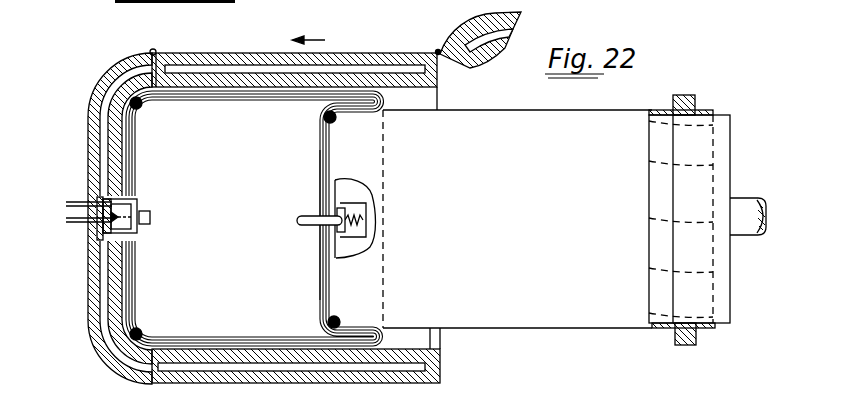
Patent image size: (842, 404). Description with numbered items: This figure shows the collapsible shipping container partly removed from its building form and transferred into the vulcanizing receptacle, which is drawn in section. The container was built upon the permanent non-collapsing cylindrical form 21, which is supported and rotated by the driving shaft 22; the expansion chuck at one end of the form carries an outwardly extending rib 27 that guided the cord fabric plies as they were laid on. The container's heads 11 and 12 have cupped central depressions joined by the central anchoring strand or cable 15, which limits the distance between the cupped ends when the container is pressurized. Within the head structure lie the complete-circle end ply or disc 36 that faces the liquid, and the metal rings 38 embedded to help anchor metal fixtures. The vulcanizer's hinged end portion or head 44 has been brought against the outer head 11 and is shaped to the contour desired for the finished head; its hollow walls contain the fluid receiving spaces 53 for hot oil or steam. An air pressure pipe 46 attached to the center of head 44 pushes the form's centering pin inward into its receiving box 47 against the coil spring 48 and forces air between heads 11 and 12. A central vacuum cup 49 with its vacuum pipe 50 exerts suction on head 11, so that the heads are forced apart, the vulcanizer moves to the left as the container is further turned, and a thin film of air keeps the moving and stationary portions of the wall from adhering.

The head 11 is at (151, 293).
The head 12 is at (309, 297).
The central anchoring strand or cable 15 is at (506, 13).
The cylindrical form 21 is at (517, 219).
The driving shaft 22 is at (752, 199).
The rib 27 is at (694, 100).
The disc 36 is at (141, 170).
The metal rings 38 is at (143, 193).
The hinged end portion 44 is at (106, 80).
The air pressure pipe 46 is at (96, 226).
The receiving box 47 is at (366, 186).
The coil spring 48 is at (364, 229).
The vacuum cup 49 is at (120, 250).
The vacuum pipe 50 is at (76, 200).
The fluid receiving spaces 53 is at (218, 67).